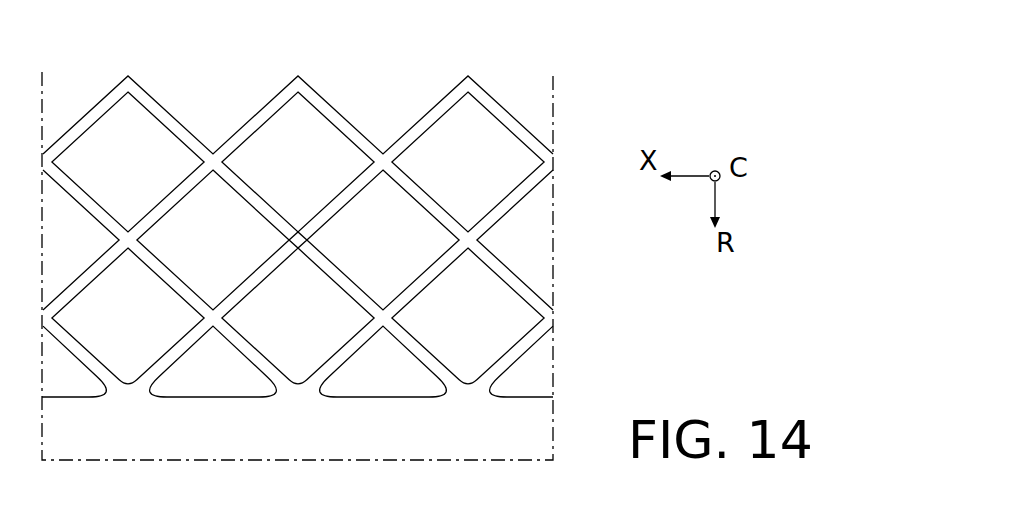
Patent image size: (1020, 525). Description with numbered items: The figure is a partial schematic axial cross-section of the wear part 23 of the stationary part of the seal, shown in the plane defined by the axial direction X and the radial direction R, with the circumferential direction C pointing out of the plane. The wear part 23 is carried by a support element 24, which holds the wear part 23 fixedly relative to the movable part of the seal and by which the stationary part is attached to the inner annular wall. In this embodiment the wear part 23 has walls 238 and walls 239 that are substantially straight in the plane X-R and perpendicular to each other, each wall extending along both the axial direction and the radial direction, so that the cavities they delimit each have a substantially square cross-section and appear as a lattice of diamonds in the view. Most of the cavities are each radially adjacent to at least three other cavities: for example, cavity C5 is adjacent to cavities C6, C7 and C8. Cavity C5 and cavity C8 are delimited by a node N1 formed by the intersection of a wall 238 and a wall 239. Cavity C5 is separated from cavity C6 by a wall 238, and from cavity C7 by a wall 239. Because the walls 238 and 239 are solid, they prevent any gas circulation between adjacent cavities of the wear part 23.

The wear part 23 is at (604, 86).
The support element 24 is at (375, 417).
The wall 238 is at (441, 110).
The wall 239 is at (430, 198).
The cavity C5 is at (298, 316).
The cavity C6 is at (213, 240).
The cavity C7 is at (383, 240).
The cavity C8 is at (298, 162).
The node N1 is at (298, 253).